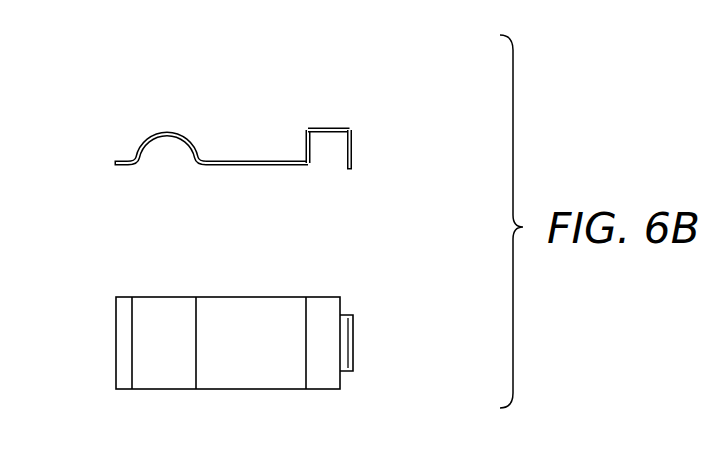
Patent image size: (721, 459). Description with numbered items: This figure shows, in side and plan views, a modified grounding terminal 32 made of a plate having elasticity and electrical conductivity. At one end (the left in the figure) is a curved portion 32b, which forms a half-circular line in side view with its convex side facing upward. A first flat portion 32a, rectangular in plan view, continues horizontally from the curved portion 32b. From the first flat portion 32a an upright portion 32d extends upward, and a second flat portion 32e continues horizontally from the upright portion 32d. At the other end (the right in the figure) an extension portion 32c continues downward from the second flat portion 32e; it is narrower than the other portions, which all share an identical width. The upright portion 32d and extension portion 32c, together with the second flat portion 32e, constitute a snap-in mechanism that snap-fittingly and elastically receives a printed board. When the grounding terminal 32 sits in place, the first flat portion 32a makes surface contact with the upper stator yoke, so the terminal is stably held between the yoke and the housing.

The grounding terminal 32 is at (106, 104).
The first flat portion 32a is at (222, 160).
The curved portion 32b is at (167, 133).
The extension portion 32c is at (352, 148).
The upright portion 32d is at (305, 147).
The second flat portion 32e is at (330, 128).